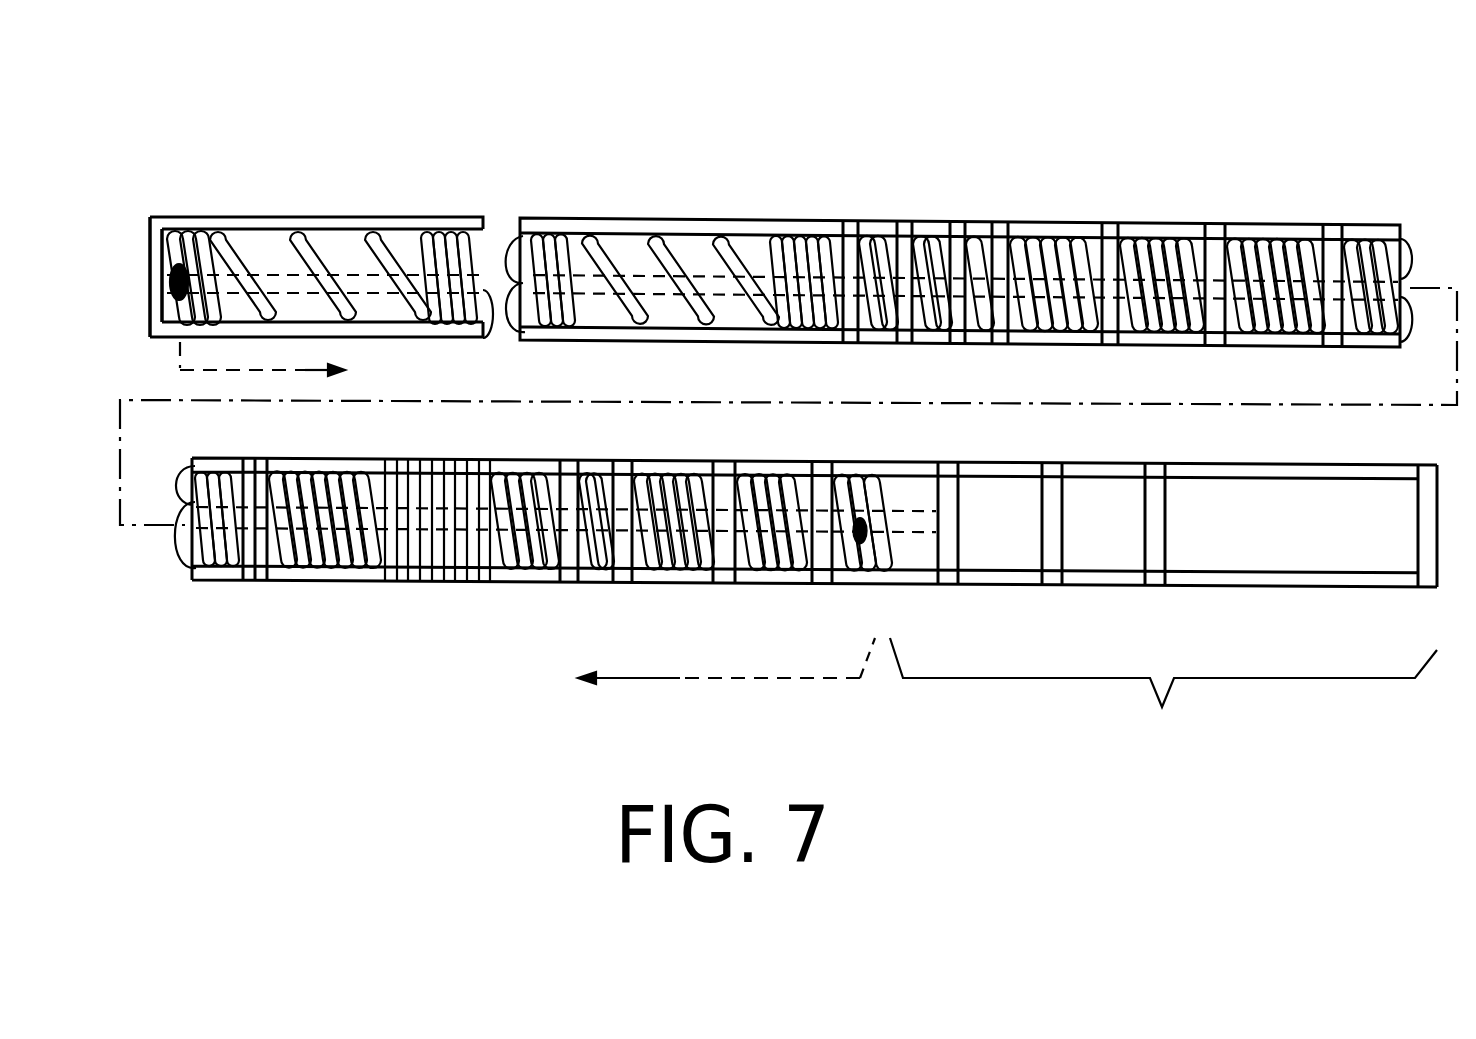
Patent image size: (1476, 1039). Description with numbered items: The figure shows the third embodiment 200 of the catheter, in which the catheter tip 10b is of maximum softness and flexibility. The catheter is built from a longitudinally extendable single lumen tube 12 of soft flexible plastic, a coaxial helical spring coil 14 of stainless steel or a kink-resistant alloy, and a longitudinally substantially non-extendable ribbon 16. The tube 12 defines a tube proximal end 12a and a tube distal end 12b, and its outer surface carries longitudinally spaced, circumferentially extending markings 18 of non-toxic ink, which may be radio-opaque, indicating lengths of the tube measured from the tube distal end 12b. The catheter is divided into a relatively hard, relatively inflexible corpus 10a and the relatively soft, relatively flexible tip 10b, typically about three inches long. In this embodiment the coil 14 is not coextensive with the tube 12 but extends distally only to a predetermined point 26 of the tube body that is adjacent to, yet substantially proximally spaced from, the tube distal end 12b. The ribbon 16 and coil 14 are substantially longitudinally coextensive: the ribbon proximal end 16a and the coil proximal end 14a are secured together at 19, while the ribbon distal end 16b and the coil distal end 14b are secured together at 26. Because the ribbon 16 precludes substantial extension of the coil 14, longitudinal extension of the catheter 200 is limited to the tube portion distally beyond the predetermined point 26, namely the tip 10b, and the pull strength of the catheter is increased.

The third embodiment catheter 200 is at (753, 195).
The corpus 10a is at (527, 518).
The tip 10b is at (1163, 695).
The tube 12 is at (230, 580).
The tube proximal end 12a is at (152, 252).
The tube distal end 12b is at (1448, 572).
The coil 14 is at (306, 545).
The coil proximal end 14a is at (180, 280).
The coil distal end 14b is at (882, 523).
The ribbon 16 is at (340, 528).
The ribbon proximal end 16a is at (180, 280).
The ribbon distal end 16b is at (882, 523).
The markings 18 is at (1006, 222).
The securing point of proximal ends 19 is at (152, 312).
The predetermined point 26 is at (870, 518).